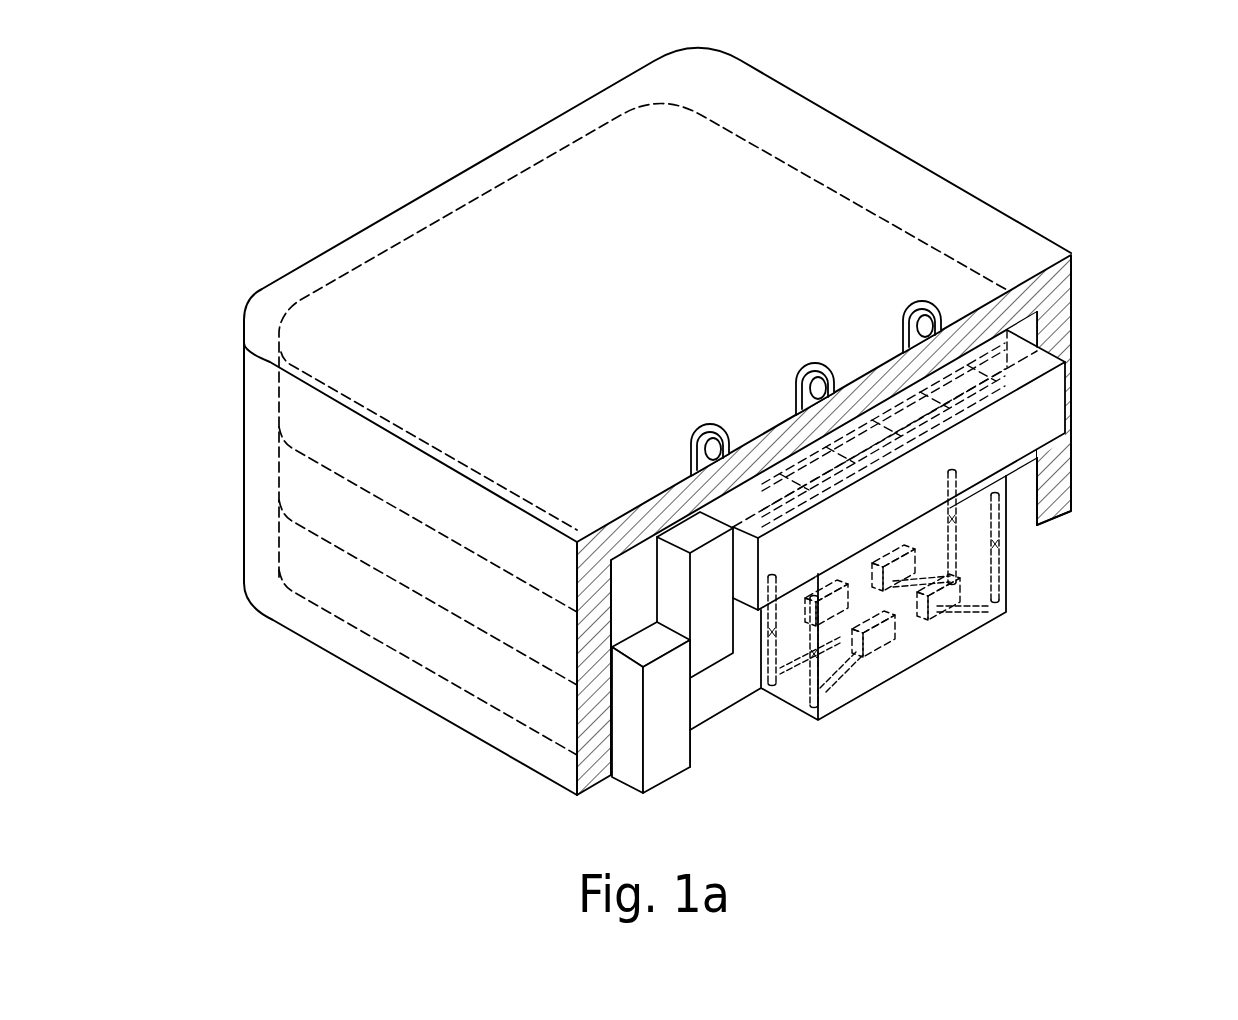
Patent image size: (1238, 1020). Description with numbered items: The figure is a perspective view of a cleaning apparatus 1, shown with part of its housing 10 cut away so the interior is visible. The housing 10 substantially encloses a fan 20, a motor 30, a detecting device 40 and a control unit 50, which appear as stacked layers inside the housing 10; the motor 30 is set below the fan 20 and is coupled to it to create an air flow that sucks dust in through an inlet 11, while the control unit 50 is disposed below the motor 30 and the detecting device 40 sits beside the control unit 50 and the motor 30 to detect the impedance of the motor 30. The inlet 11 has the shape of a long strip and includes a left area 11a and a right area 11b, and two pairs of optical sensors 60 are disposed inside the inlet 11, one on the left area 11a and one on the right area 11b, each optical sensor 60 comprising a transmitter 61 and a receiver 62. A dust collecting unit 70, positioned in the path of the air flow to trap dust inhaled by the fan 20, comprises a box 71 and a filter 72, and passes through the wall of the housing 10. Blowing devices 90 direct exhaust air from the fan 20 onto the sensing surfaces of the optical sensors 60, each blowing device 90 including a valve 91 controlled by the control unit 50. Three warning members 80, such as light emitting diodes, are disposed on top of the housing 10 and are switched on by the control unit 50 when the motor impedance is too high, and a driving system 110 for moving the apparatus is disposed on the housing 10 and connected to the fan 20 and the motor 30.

The cleaning apparatus 1 is at (140, 113).
The housing 10 is at (1007, 312).
The fan 20 is at (314, 414).
The motor 30 is at (314, 492).
The control unit 50 is at (314, 577).
The detecting device 40 is at (632, 768).
The driving system 110 is at (716, 603).
The dust collecting unit 70 is at (1052, 347).
The box 71 is at (1045, 470).
The filter 72 is at (1063, 397).
The warning member 80 is at (925, 303).
The inlet 11 is at (886, 633).
The left area 11a is at (802, 694).
The right area 11b is at (937, 620).
The blowing device 90 is at (1000, 590).
The valve 91 is at (1010, 540).
The optical sensor 60 is at (881, 693).
The transmitter 61 is at (882, 652).
The receiver 62 is at (850, 648).